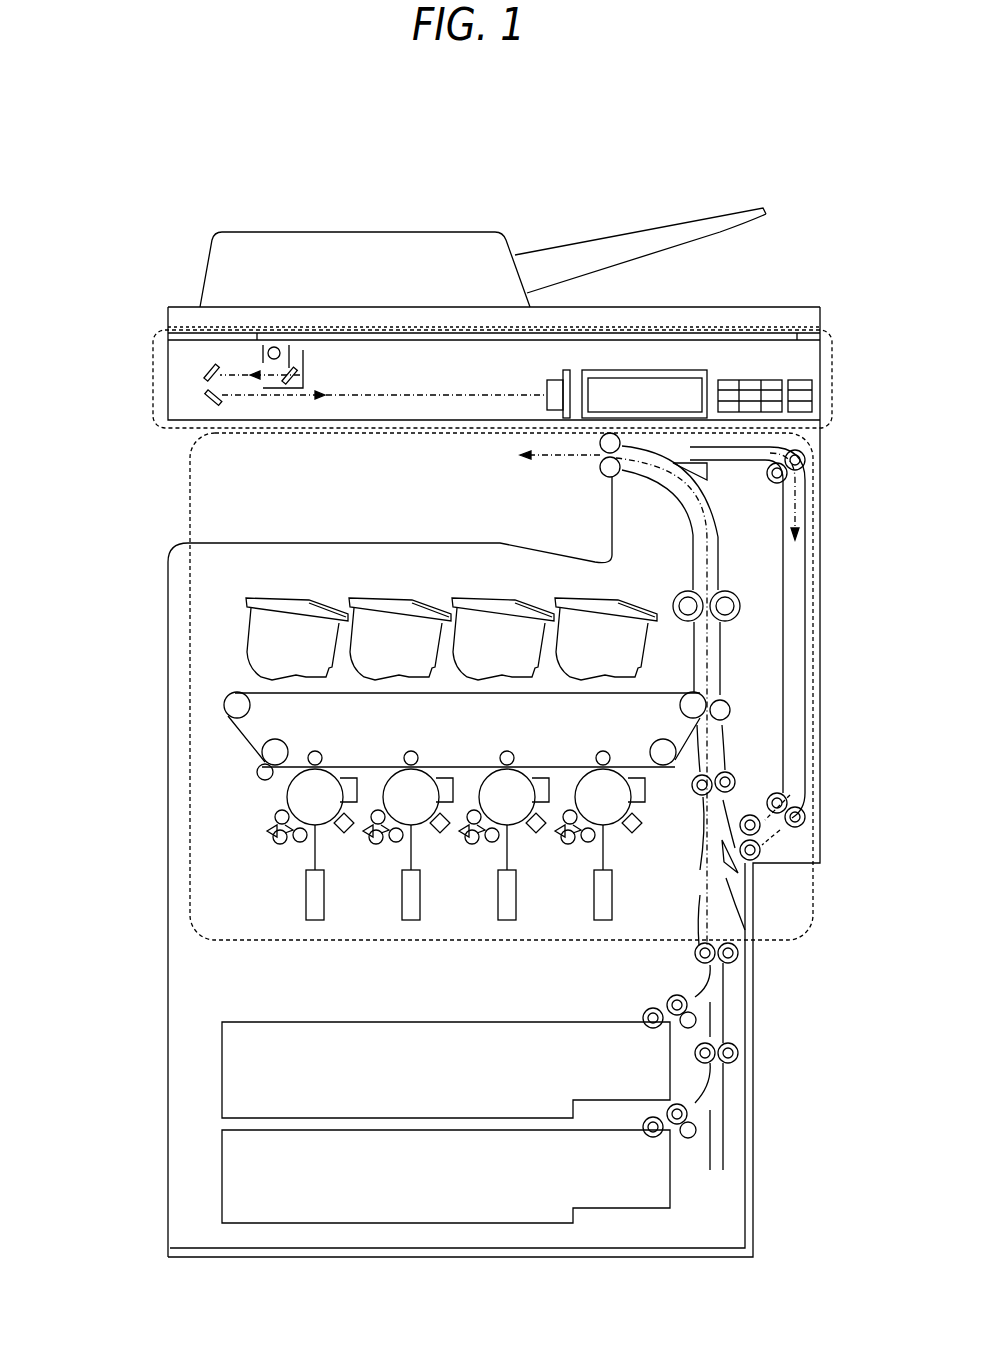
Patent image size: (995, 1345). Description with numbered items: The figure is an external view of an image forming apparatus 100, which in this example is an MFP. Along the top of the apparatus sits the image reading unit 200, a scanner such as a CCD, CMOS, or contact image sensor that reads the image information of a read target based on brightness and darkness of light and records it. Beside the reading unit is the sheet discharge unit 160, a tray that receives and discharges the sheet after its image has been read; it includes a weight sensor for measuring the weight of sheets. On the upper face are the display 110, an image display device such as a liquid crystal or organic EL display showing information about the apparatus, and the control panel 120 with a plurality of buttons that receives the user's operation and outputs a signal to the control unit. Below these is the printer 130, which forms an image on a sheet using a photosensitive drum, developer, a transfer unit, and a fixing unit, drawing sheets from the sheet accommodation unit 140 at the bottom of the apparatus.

The image forming apparatus 100 is at (618, 148).
The display 110 is at (647, 392).
The control panel 120 is at (815, 395).
The printer 130 is at (190, 668).
The sheet accommodation unit 140 is at (218, 1022).
The sheet discharge unit 160 is at (602, 307).
The image reading unit 200 is at (153, 375).